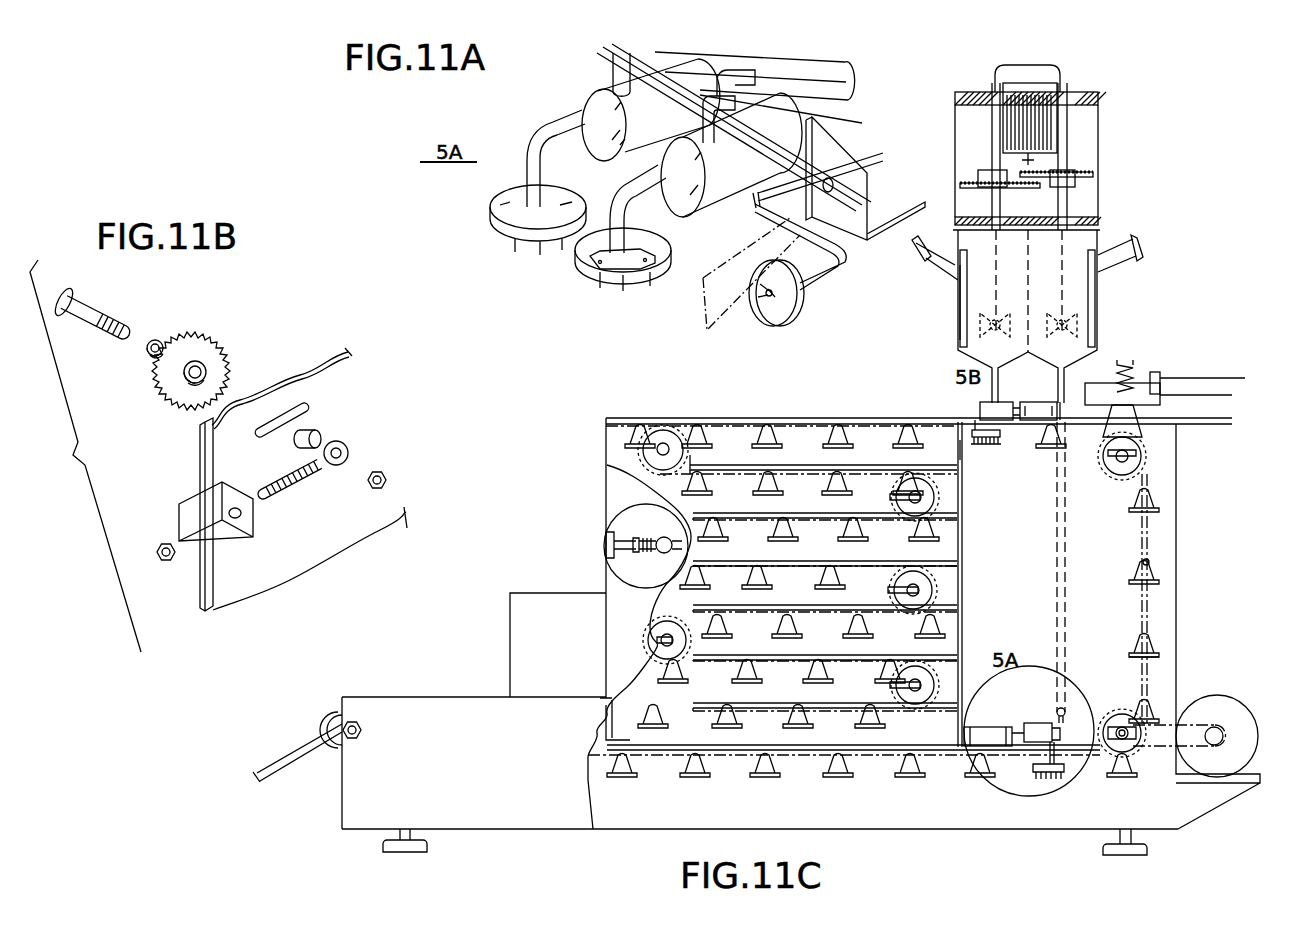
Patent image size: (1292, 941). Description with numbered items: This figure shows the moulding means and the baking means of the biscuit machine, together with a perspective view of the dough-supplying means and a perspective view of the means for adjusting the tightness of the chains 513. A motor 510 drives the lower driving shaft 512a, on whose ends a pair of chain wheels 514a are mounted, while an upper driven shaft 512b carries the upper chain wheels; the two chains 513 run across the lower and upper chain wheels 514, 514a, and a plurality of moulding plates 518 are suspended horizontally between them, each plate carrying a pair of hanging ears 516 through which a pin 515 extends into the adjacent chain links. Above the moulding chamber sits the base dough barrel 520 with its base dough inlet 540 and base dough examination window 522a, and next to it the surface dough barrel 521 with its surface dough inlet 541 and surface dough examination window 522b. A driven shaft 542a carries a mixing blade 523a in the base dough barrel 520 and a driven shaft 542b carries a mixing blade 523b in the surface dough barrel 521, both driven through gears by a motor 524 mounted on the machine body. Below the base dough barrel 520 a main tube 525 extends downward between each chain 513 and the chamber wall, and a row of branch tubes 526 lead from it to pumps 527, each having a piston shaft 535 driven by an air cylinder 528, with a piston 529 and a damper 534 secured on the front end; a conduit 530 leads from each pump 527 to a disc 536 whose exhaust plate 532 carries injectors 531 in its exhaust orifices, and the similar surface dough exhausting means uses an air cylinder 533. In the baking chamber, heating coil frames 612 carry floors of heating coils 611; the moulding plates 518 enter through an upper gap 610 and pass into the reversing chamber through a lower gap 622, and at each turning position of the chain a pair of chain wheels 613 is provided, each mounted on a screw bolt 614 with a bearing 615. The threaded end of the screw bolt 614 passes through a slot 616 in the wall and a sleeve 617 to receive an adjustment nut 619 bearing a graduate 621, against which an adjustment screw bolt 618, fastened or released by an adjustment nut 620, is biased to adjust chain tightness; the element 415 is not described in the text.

In FIG. 11C, the funnel guide 415 is at (1123, 423).
In FIG. 11C, the motor 510 is at (1226, 709).
In FIG. 11C, the driving shaft 512a is at (1122, 728).
In FIG. 11C, the upper driven shaft 512b is at (1126, 456).
In FIG. 11C, the chains 513 is at (1150, 608).
In FIG. 11C, the chain wheels 514 is at (940, 590).
In FIG. 11C, the chain wheels 514a is at (1122, 716).
In FIG. 11C, the pin 515 is at (1148, 562).
In FIG. 11C, the hanging ears 516 is at (1156, 498).
In FIG. 11C, the moulding plates 518 is at (1156, 649).
In FIG. 11A, the base dough barrel 520 is at (1077, 243).
In FIG. 11A, the surface dough barrel 521 is at (977, 292).
In FIG. 11A, the base dough examination window 522a is at (1093, 303).
In FIG. 11A, the surface dough examination window 522b is at (958, 340).
In FIG. 11A, the mixing blade 523a is at (1073, 325).
In FIG. 11A, the mixing blade 523b is at (970, 327).
In FIG. 11A, the motor 524 is at (1037, 140).
In FIG. 11A, the main tube 525 is at (730, 78).
In FIG. 11C, the main tube 525 is at (1055, 571).
In FIG. 11A, the branch tubes 526 is at (620, 68).
In FIG. 11C, the branch tubes 526 is at (1040, 723).
In FIG. 11A, the pump 527 is at (585, 107).
In FIG. 11C, the pump 527 is at (1020, 733).
In FIG. 11A, the air cylinder 528 is at (835, 100).
In FIG. 11C, the air cylinder 528 is at (992, 736).
In FIG. 11A, the piston 529 is at (773, 317).
In FIG. 11A, the conduit 530 is at (635, 203).
In FIG. 11C, the conduit 530 is at (980, 408).
In FIG. 11A, the injector 531 is at (620, 297).
In FIG. 11A, the exhaust plate 532 is at (640, 300).
In FIG. 11C, the air cylinder 533 is at (1033, 408).
In FIG. 11A, the damper 534 is at (753, 280).
In FIG. 11C, the damper 534 is at (1000, 413).
In FIG. 11A, the piston shaft 535 is at (817, 283).
In FIG. 11A, the disc 536 is at (667, 263).
In FIG. 11A, the base dough inlet 540 is at (1120, 260).
In FIG. 11A, the surface dough inlet 541 is at (940, 272).
In FIG. 11A, the driven shaft 542a is at (1067, 202).
In FIG. 11A, the driven shaft 542b is at (992, 250).
In FIG. 11C, the upper gap 610 is at (960, 441).
In FIG. 11C, the heating coils 611 is at (727, 463).
In FIG. 11C, the heating coil frames 612 is at (890, 508).
In FIG. 11B, the chain wheels 613 is at (205, 345).
In FIG. 11C, the chain wheels 613 is at (647, 435).
In FIG. 11B, the screw bolt 614 is at (89, 310).
In FIG. 11B, the bearing 615 is at (160, 340).
In FIG. 11B, the slot 616 is at (322, 367).
In FIG. 11C, the slot 616 is at (673, 558).
In FIG. 11B, the sleeve 617 is at (316, 432).
In FIG. 11B, the adjustment screw bolt 618 is at (348, 462).
In FIG. 11B, the adjustment nut 619 is at (389, 483).
In FIG. 11B, the adjustment nut 620 is at (305, 480).
In FIG. 11C, the graduate 621 is at (651, 530).
In FIG. 11C, the lower gap 622 is at (605, 727).